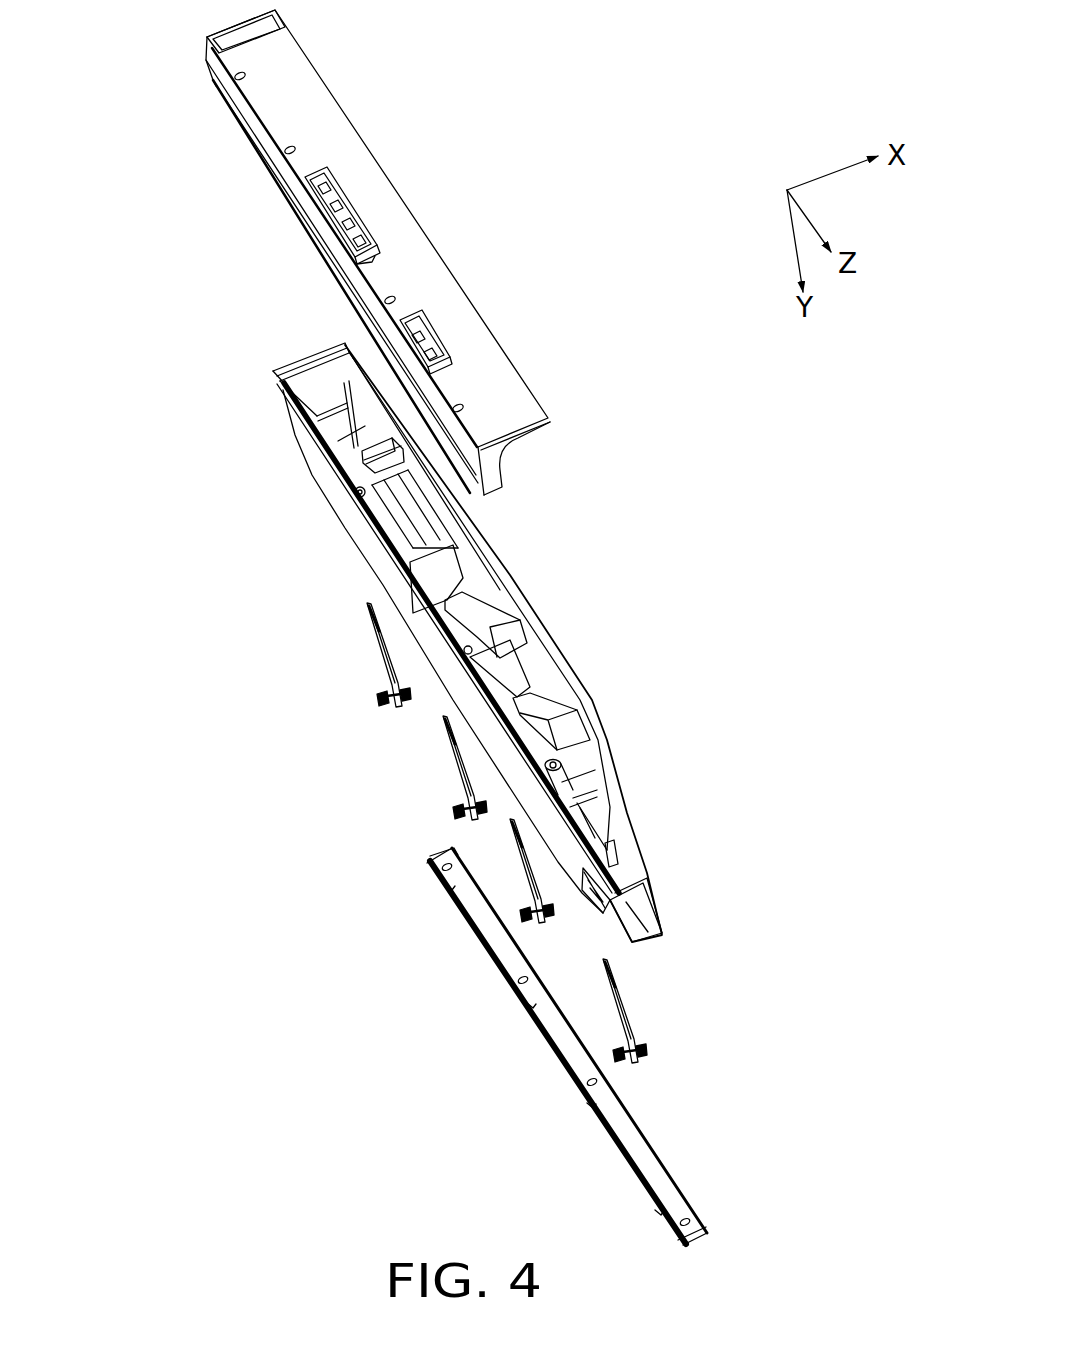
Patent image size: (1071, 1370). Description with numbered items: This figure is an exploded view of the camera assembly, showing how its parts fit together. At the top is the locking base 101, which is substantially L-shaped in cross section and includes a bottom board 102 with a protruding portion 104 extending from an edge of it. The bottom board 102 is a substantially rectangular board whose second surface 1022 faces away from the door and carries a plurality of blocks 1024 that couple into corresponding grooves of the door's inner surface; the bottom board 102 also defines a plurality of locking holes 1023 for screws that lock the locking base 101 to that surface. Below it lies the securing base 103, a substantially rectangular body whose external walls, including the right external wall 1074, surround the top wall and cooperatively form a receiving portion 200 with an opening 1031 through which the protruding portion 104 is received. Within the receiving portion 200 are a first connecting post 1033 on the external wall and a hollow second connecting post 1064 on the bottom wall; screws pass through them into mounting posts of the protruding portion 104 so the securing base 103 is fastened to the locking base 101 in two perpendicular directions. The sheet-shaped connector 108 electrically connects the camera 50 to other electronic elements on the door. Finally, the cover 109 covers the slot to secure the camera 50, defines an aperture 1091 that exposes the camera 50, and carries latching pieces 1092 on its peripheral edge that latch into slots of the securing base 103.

The locking base 101 is at (157, 88).
The bottom board 102 is at (305, 72).
The second surface 1022 is at (503, 375).
The locking holes 1023 is at (293, 147).
The blocks 1024 is at (430, 328).
The protruding portion 104 is at (247, 108).
The securing base 103 is at (227, 432).
The opening 1031 is at (508, 572).
The right external wall 1074 is at (357, 533).
The receiving portion 200 is at (442, 518).
The first connecting post 1033 is at (570, 728).
The second connecting post 1064 is at (563, 783).
The connector 108 is at (620, 998).
The camera 50 is at (637, 1052).
The cover 109 is at (647, 1158).
The aperture 1091 is at (678, 1223).
The latching pieces 1092 is at (658, 1210).